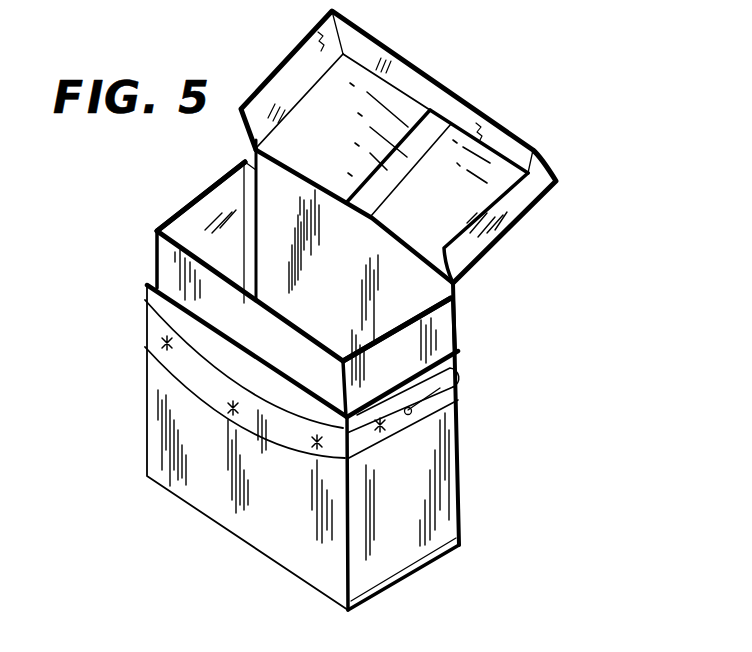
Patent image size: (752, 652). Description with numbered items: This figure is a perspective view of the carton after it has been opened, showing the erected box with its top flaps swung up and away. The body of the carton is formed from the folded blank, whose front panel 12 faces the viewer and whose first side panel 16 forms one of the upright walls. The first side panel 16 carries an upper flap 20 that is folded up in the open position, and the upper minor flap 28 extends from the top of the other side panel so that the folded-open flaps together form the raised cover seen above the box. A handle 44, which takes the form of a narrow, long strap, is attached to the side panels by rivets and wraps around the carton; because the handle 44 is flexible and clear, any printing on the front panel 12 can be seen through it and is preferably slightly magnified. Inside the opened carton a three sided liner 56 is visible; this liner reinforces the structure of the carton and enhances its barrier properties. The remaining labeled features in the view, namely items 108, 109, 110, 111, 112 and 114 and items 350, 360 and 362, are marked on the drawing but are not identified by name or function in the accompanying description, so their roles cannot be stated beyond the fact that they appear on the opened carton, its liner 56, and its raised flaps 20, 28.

The front panel 12 is at (283, 546).
The first side panel 16 is at (452, 250).
The upper flap 20 is at (457, 203).
The upper minor flap 28 is at (378, 64).
The handle 44 is at (397, 420).
The liner 56 is at (457, 323).
The rear wall edge 108 is at (457, 337).
The inner sleeve front rim 109 is at (377, 338).
The inner sleeve 110 is at (167, 272).
The inner sleeve side wall 111 is at (157, 245).
The inner sleeve top edge 112 is at (200, 227).
The opening direction arrow 114 is at (508, 255).
The lid side flange 350 is at (307, 100).
The tuck flap panel 360 is at (500, 177).
The slot 362 is at (453, 380).